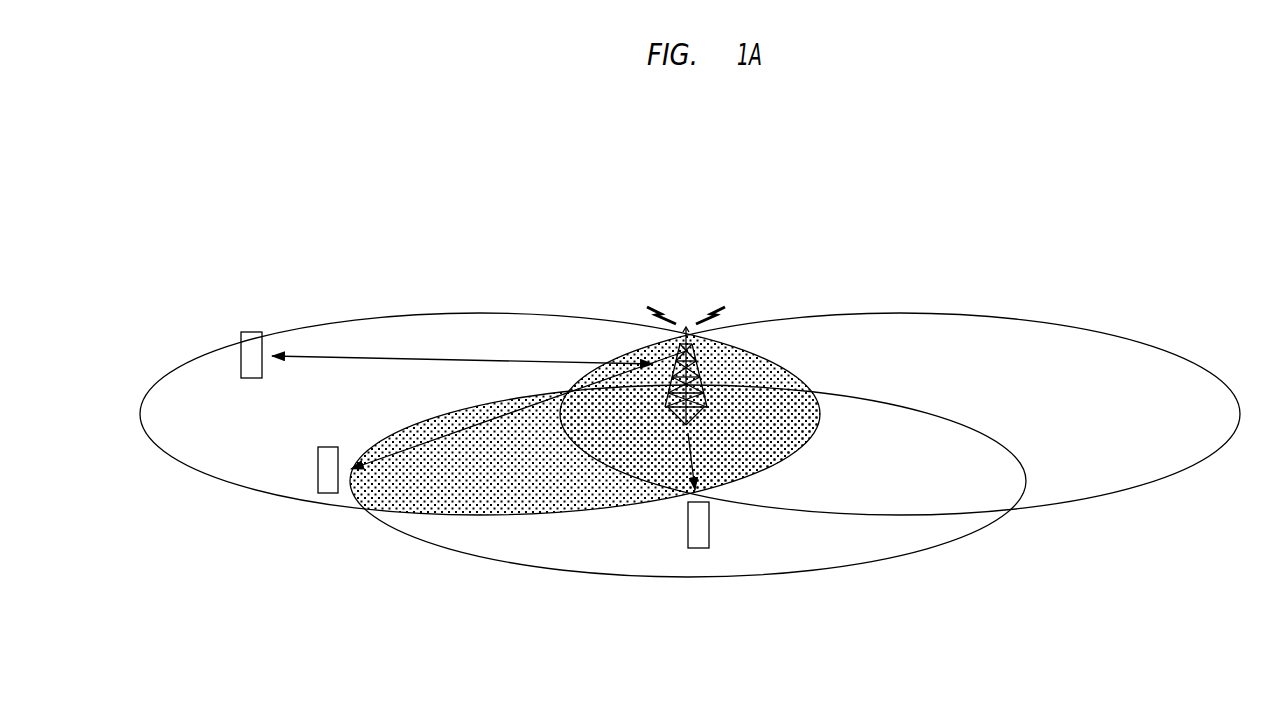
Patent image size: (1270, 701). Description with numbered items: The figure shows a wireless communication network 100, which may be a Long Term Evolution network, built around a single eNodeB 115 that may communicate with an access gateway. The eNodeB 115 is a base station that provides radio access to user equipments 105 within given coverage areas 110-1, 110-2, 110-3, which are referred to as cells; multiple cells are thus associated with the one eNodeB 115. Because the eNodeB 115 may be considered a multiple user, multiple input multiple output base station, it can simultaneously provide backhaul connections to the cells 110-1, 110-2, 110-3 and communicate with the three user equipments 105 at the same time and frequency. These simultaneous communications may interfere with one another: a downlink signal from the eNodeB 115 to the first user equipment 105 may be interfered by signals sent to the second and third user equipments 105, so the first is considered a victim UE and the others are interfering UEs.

The wireless communication network 100 is at (1054, 183).
The user equipments 105 is at (687, 540).
The coverage area 110-1 is at (385, 316).
The coverage area 110-2 is at (533, 572).
The coverage area 110-3 is at (1002, 314).
The eNodeB 115 is at (726, 300).